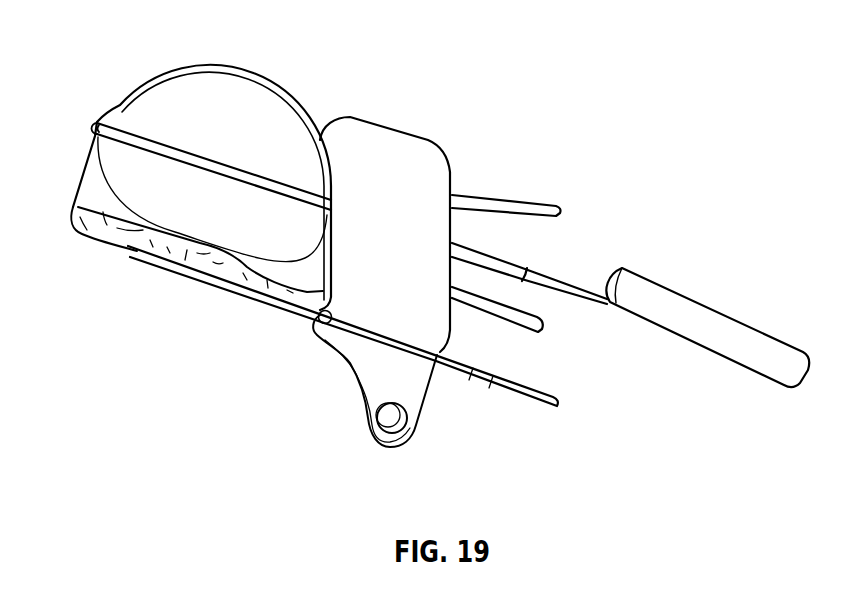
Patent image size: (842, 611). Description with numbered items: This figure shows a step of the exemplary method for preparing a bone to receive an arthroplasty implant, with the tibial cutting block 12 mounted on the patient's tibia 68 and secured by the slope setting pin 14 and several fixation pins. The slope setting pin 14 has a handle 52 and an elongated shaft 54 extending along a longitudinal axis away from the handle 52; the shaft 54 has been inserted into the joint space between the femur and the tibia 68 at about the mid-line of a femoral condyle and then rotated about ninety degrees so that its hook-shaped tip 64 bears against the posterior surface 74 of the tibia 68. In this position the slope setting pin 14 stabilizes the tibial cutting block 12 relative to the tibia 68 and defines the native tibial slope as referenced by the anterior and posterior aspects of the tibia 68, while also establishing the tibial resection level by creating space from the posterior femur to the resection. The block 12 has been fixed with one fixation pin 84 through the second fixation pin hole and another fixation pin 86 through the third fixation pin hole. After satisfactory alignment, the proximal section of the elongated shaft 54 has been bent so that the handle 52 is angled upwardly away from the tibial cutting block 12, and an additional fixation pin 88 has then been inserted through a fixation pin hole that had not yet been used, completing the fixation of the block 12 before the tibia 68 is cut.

The tibial cutting block 12 is at (403, 152).
The slope setting pin 14 is at (583, 283).
The handle 52 is at (690, 307).
The elongated shaft 54 is at (257, 177).
The hook-shaped tip 64 is at (92, 129).
The tibia 68 is at (213, 84).
The posterior surface 74 is at (117, 112).
The fixation pin 84 is at (520, 207).
The fixation pin 86 is at (530, 402).
The additional fixation pin 88 is at (507, 322).